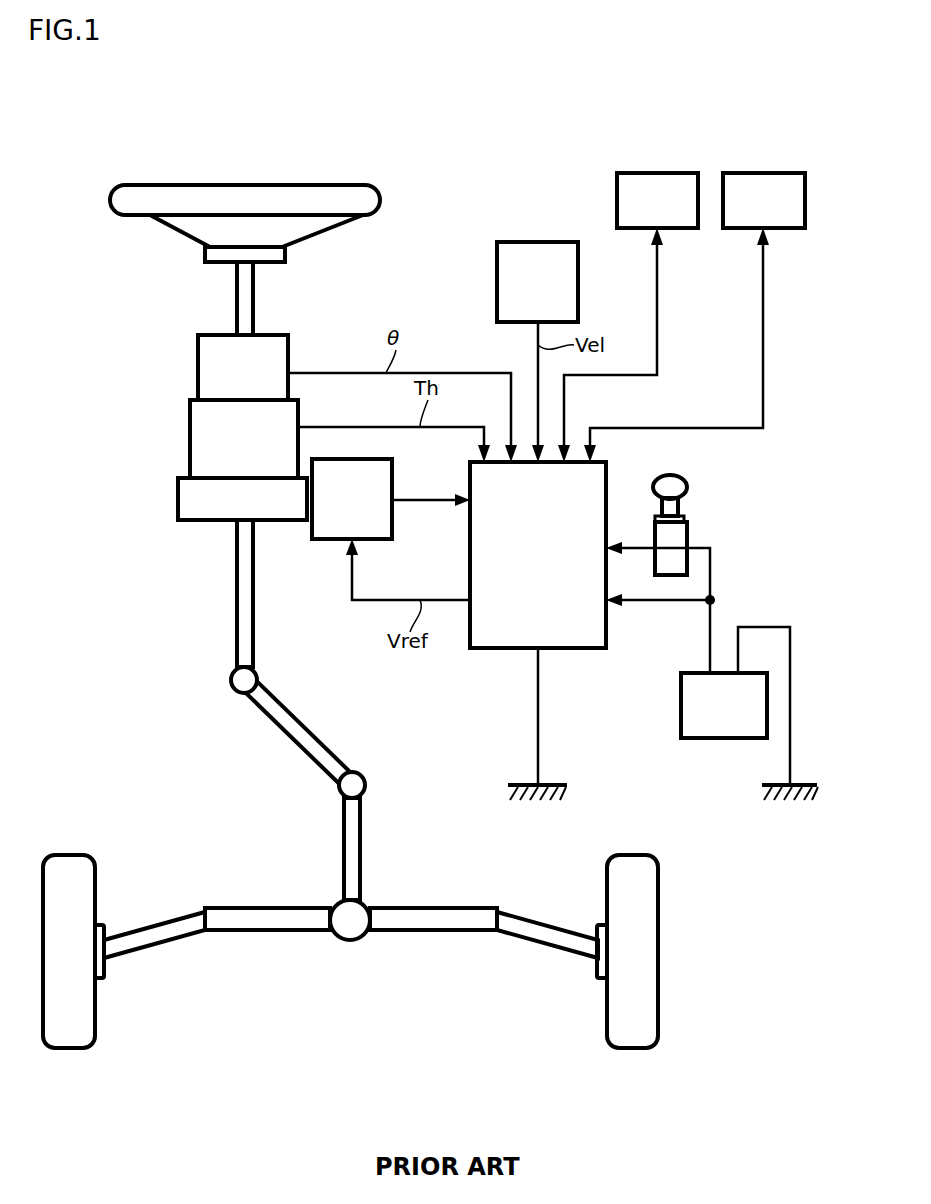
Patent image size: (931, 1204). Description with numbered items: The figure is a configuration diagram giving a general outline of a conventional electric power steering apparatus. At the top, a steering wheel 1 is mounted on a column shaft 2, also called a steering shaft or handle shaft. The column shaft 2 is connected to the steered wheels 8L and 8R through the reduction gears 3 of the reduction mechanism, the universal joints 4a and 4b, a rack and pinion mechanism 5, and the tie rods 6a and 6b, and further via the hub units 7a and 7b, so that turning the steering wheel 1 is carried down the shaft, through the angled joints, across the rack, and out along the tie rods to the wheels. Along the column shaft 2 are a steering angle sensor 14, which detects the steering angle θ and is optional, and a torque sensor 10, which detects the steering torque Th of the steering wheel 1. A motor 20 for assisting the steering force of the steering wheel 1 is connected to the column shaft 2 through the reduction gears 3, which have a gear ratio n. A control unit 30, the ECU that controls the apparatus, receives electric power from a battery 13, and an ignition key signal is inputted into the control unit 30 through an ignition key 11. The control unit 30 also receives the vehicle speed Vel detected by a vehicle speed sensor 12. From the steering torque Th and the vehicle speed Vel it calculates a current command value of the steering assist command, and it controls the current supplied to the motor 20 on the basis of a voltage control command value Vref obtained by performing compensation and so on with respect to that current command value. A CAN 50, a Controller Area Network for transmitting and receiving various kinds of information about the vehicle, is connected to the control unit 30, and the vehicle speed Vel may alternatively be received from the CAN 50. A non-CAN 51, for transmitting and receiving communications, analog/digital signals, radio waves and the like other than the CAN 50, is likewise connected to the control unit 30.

The steering wheel 1 is at (382, 196).
The column shaft 2 is at (237, 306).
The steering angle sensor 14 is at (198, 370).
The torque sensor 10 is at (190, 428).
The reduction gears 3 is at (178, 505).
The motor 20 is at (392, 468).
The control unit 30 is at (606, 466).
The vehicle speed sensor 12 is at (578, 250).
The non-CAN 51 is at (686, 172).
The CAN 50 is at (792, 172).
The ignition key 11 is at (687, 484).
The battery 13 is at (681, 700).
The universal joint 4a is at (230, 690).
The universal joint 4b is at (338, 797).
The rack and pinion mechanism 5 is at (362, 900).
The tie rod 6a is at (140, 920).
The tie rod 6b is at (540, 920).
The hub unit 7a is at (105, 973).
The hub unit 7b is at (597, 973).
The steered wheel 8L is at (95, 1035).
The steered wheel 8R is at (607, 1035).